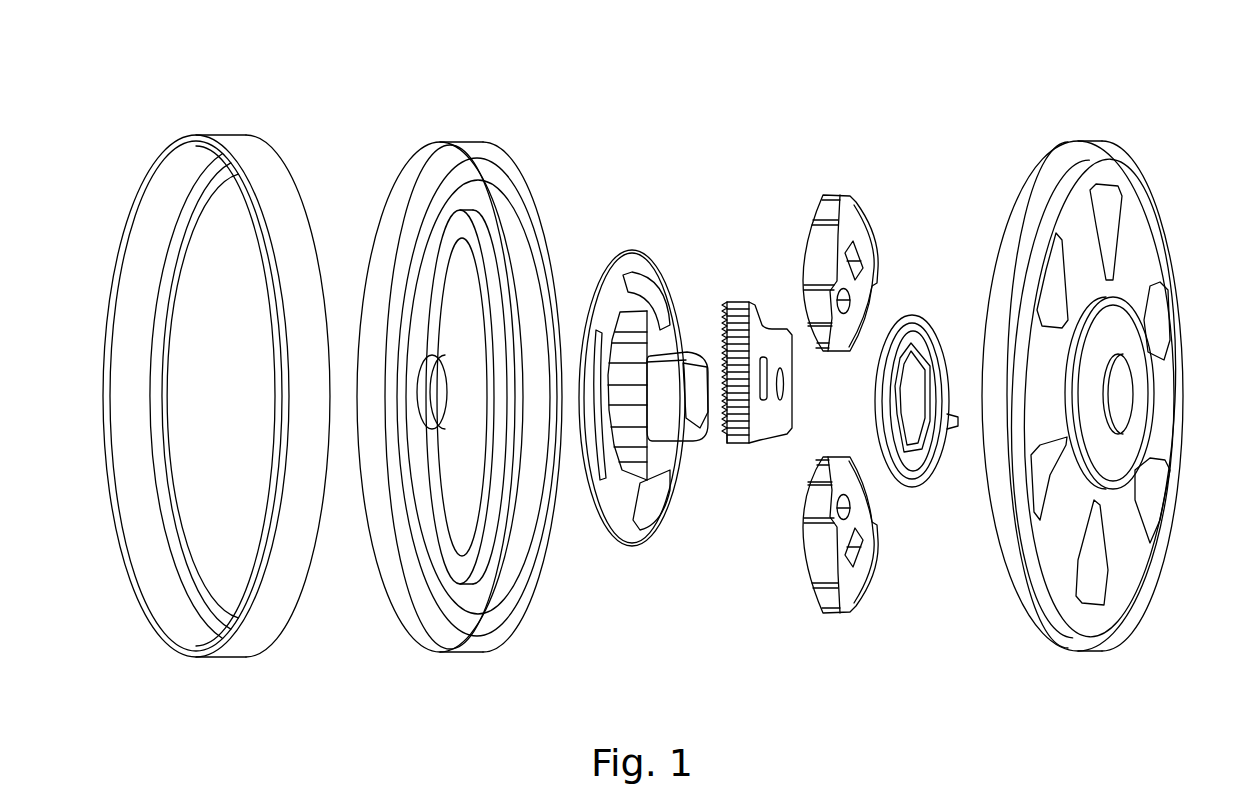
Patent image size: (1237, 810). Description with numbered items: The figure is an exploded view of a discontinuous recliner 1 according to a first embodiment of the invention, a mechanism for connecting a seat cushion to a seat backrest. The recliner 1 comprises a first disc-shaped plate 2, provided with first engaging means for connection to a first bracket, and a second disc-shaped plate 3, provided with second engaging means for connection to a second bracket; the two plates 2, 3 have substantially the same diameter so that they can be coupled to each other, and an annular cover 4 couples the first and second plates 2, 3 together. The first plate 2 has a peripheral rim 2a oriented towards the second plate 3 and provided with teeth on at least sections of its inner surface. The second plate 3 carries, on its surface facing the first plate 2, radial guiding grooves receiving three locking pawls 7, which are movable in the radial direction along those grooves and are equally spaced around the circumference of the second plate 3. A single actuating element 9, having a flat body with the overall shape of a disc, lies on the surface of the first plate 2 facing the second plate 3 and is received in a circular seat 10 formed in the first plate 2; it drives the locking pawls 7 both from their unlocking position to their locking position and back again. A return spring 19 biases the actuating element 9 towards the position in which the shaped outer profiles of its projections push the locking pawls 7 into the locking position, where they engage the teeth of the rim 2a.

The discontinuous recliner 1 is at (966, 103).
The first disc-shaped plate 2 is at (452, 142).
The peripheral rim 2a is at (527, 224).
The second disc-shaped plate 3 is at (1075, 142).
The cover 4 is at (217, 135).
The locking pawls 7 is at (753, 443).
The actuating element 9 is at (632, 250).
The circular seat 10 is at (466, 520).
The return spring 19 is at (916, 316).